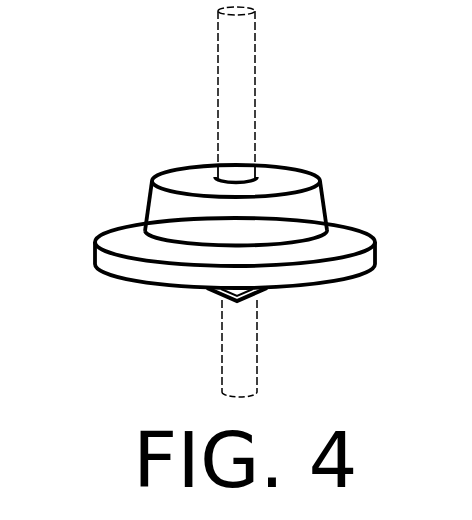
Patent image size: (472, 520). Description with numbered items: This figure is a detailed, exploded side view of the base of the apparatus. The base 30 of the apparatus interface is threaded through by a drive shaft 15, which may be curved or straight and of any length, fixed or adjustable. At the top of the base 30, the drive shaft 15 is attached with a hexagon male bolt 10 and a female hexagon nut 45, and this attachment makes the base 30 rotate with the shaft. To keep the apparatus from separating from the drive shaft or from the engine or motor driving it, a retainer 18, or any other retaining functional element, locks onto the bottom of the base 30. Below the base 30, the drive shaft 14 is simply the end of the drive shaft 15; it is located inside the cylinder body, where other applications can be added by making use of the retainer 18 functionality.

The hexagon male bolt 10 is at (235, 202).
The drive shaft 15 is at (238, 145).
The female hexagon nut 45 is at (272, 179).
The base 30 is at (247, 256).
The retainer 18 is at (208, 292).
The drive shaft end 14 is at (245, 316).